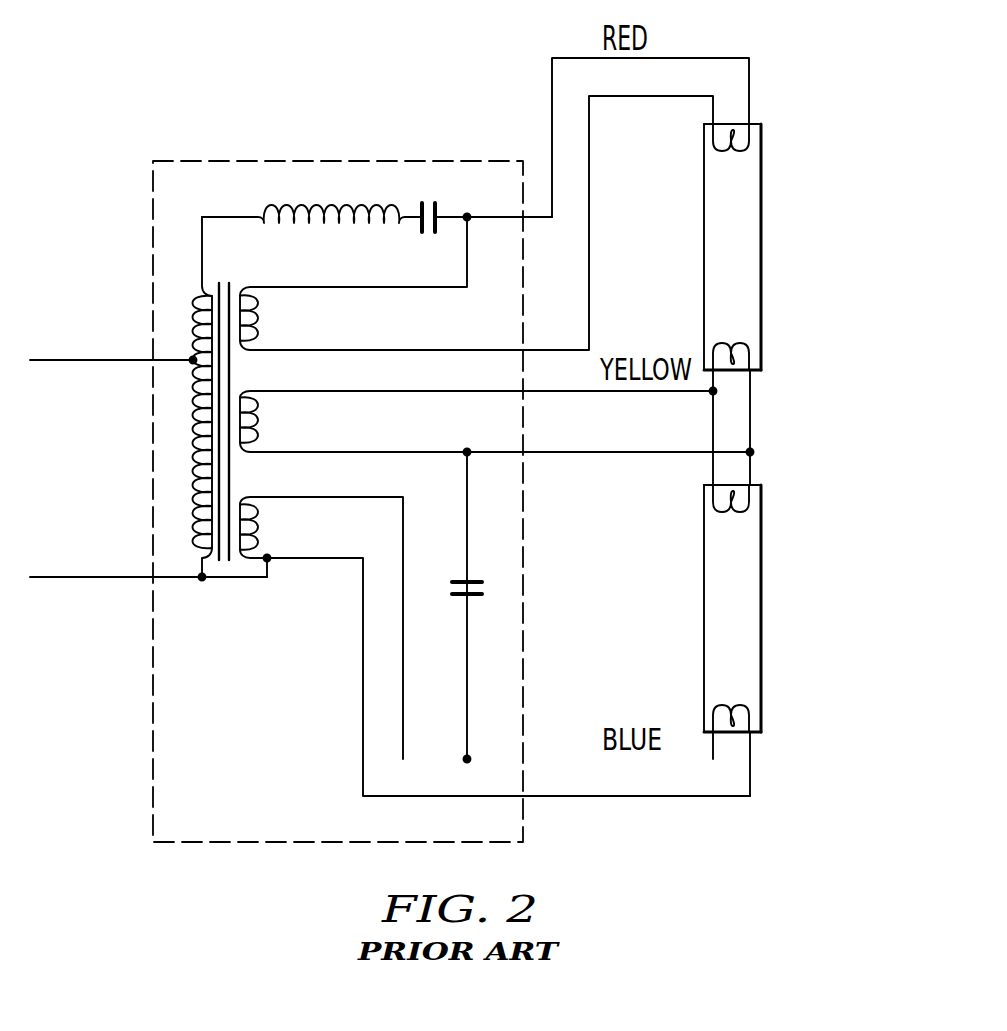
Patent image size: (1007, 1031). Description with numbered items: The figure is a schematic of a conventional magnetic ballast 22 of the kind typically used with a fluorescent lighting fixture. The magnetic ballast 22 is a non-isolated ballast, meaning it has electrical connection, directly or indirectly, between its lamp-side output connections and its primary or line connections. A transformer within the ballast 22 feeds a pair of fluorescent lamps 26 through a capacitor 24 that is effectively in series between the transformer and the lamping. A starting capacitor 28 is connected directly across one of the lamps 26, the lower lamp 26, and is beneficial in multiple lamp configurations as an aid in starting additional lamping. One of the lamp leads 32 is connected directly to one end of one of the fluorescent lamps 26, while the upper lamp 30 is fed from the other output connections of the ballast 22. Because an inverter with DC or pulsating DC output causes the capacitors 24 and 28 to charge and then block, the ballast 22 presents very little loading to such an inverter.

The magnetic ballast 22 is at (390, 457).
The capacitor 24 is at (420, 231).
The fluorescent lamps 26 is at (778, 426).
The starting capacitor 28 is at (460, 578).
The first lamp 30 is at (763, 116).
The lamp lead 32 is at (763, 745).